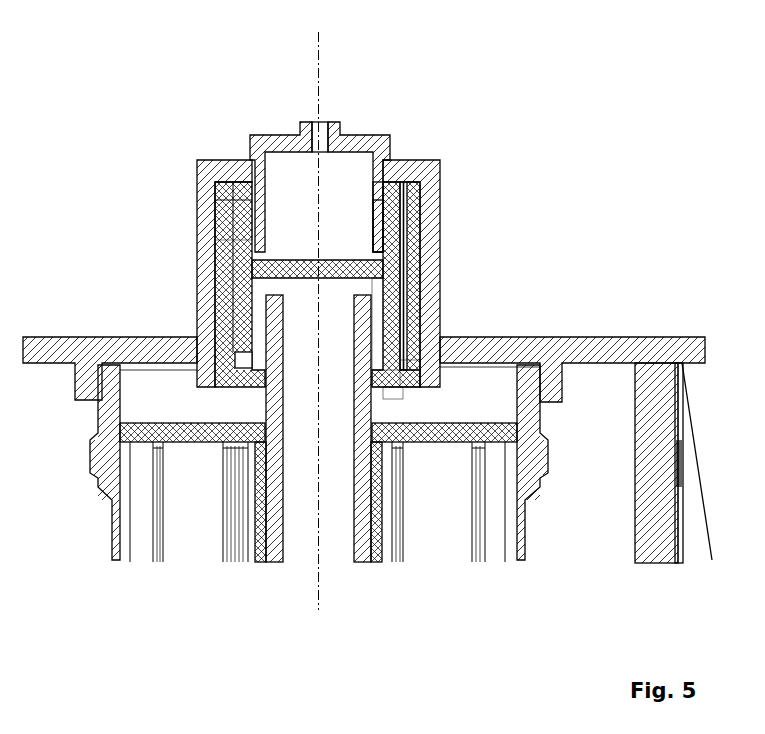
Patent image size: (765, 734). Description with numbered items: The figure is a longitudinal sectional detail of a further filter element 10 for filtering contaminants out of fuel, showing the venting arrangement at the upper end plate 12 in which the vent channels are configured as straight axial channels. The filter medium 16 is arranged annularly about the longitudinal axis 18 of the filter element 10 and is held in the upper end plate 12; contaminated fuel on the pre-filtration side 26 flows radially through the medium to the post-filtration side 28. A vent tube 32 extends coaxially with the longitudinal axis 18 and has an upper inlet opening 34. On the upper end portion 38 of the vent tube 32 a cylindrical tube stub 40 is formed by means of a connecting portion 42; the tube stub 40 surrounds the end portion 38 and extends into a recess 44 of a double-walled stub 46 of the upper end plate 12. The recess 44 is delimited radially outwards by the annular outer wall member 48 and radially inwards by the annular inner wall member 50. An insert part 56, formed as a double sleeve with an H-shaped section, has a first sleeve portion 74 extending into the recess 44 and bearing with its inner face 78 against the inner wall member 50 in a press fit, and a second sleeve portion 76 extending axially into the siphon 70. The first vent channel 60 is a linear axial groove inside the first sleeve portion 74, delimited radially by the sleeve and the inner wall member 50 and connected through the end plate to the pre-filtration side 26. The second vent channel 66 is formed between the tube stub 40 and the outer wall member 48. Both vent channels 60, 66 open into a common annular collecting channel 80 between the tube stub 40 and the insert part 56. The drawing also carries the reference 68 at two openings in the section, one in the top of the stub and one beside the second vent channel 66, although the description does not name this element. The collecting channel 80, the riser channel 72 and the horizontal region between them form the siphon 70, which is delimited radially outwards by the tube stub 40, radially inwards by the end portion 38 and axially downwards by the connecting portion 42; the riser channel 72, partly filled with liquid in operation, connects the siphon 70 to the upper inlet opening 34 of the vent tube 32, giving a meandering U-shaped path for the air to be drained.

The filter element 10 is at (582, 143).
The upper end plate 12 is at (602, 338).
The filter medium 16 is at (718, 477).
The longitudinal axis 18 is at (318, 87).
The pre-filtration side 26 is at (590, 248).
The post-filtration side 28 is at (577, 484).
The vent tube 32 is at (372, 440).
The upper inlet opening 34 is at (300, 290).
The upper end portion 38 is at (277, 333).
The tube stub 40 is at (233, 237).
The connecting portion 42 is at (387, 382).
The recess 44 is at (233, 240).
The double-walled stub 46 is at (168, 252).
The outer wall member 48 is at (430, 240).
The inner wall member 50 is at (380, 187).
The insert part 56 is at (329, 376).
The first vent channel 60 is at (245, 198).
The second vent channel 66 is at (417, 367).
The opening 68 is at (320, 138).
The siphon 70 is at (252, 357).
The riser channel 72 is at (380, 330).
The first sleeve portion 74 is at (235, 218).
The second sleeve portion 76 is at (398, 310).
The inner face 78 is at (368, 228).
The collecting channel 80 is at (402, 207).